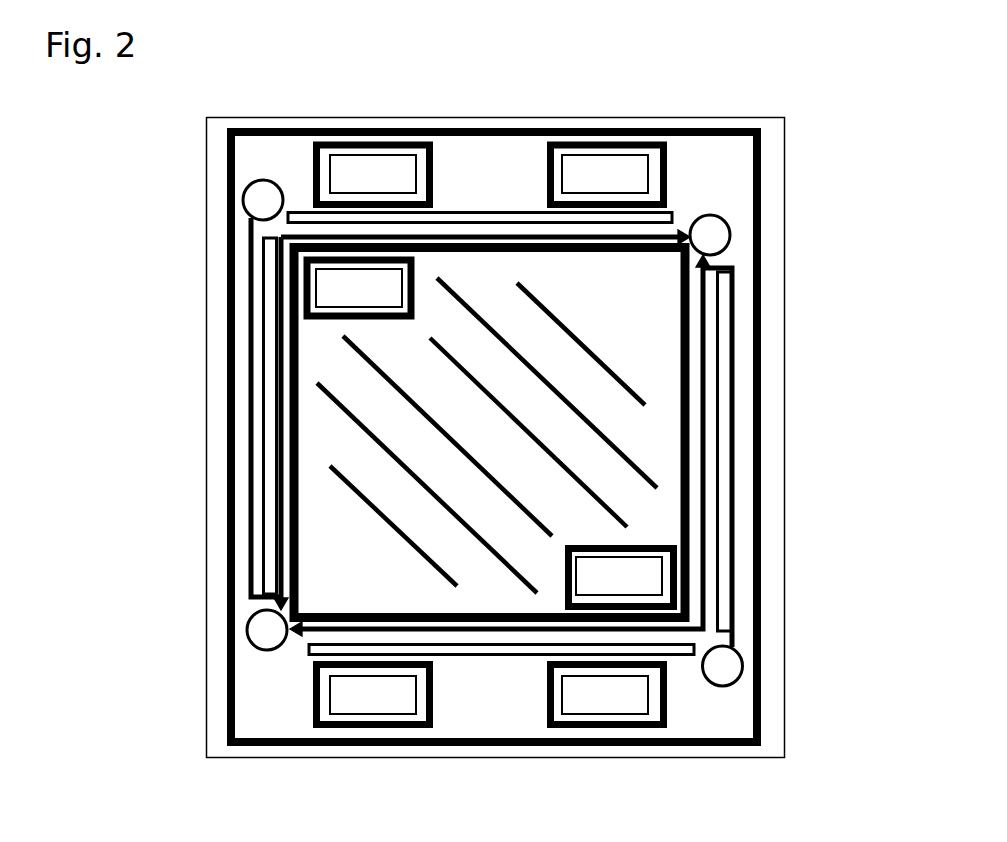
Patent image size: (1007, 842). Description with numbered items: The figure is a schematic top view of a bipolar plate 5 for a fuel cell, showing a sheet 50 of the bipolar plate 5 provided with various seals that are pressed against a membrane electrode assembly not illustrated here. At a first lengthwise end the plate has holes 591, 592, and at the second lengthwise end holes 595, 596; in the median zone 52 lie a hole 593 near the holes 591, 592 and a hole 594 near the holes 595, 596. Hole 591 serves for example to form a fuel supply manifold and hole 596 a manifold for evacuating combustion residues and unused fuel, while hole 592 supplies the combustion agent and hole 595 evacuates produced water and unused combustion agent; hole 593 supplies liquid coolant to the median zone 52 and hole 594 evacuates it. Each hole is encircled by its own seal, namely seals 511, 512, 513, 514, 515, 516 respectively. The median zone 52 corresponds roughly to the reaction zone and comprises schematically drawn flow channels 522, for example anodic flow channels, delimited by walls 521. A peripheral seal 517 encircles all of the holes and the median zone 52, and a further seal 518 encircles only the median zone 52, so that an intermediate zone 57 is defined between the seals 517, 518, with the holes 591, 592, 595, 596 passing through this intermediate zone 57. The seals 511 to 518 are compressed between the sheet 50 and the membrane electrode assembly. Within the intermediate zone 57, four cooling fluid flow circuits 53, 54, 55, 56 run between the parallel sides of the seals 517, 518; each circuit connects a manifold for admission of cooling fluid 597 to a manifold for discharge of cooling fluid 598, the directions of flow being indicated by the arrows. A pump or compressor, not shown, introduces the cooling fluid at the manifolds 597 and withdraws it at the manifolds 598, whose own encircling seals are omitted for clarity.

The bipolar plate 5 is at (800, 276).
The sheet 50 is at (785, 508).
The median zone 52 is at (310, 361).
The walls 521 is at (620, 377).
The flow channels 522 is at (392, 409).
The cooling fluid flow circuit 53 is at (497, 211).
The cooling fluid flow circuit 54 is at (733, 470).
The cooling fluid flow circuit 55 is at (480, 657).
The cooling fluid flow circuit 56 is at (262, 296).
The intermediate zone 57 is at (733, 163).
The seal 511 is at (354, 136).
The seal 512 is at (630, 137).
The seal 513 is at (271, 284).
The seal 514 is at (706, 578).
The seal 515 is at (373, 733).
The seal 516 is at (632, 733).
The peripheral seal 517 is at (757, 437).
The seal 518 is at (251, 462).
The hole 591 is at (353, 184).
The hole 592 is at (586, 184).
The hole 593 is at (339, 298).
The hole 594 is at (599, 588).
The hole 595 is at (353, 705).
The hole 596 is at (586, 705).
The manifold for admission of cooling fluid 597 is at (243, 202).
The manifold for discharge of cooling fluid 598 is at (730, 235).